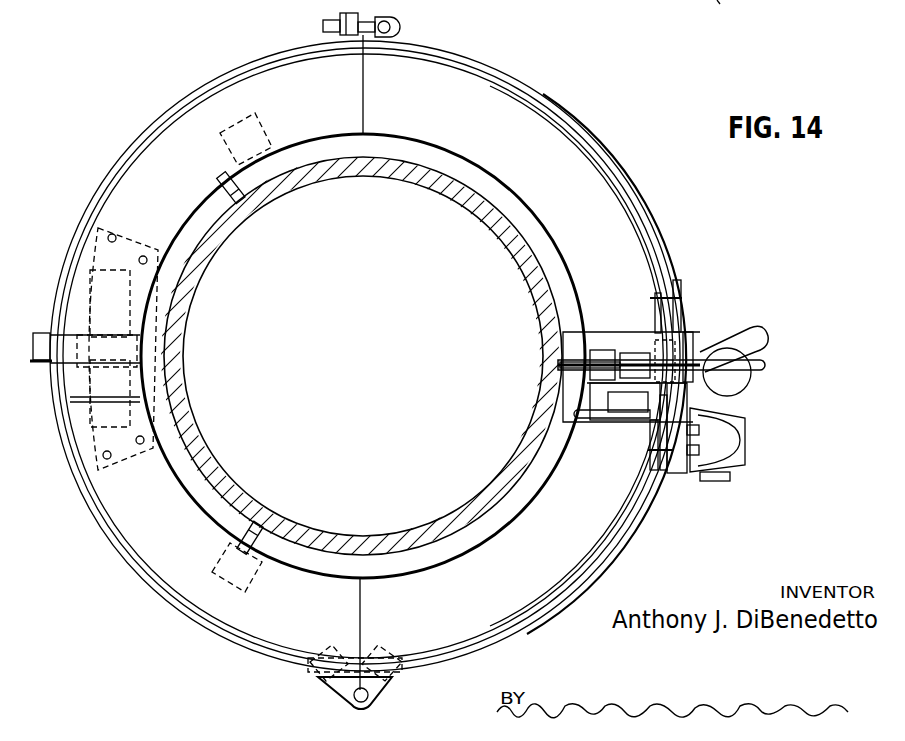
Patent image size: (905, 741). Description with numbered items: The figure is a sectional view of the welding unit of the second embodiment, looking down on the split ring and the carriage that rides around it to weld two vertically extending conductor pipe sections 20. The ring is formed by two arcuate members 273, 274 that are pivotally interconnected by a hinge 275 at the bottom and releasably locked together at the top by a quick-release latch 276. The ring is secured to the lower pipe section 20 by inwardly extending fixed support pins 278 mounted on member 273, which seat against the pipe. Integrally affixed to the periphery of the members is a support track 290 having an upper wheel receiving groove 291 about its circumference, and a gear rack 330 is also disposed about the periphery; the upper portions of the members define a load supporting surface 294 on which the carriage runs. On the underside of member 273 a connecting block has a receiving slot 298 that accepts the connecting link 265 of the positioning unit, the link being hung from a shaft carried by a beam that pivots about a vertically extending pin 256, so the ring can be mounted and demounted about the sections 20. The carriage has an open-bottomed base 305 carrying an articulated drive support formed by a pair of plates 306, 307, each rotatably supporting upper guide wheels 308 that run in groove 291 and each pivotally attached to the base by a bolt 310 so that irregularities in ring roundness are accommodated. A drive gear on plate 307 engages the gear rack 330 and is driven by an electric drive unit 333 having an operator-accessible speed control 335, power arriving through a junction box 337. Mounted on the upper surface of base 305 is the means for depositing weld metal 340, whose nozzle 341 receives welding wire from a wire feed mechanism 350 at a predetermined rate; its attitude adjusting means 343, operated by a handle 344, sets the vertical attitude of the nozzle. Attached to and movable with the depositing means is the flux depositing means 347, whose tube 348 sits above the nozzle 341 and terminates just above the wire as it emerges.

The conductor pipe sections 20 is at (354, 176).
The vertically extending pin 256 is at (745, 6).
The connecting link 265 is at (40, 333).
The arcuate member 273 is at (381, 374).
The arcuate member 274 is at (470, 664).
The hinge 275 is at (338, 702).
The quick-release latch 276 is at (379, 13).
The fixed support pins 278 is at (264, 190).
The support track 290 is at (611, 184).
The upper wheel receiving groove 291 is at (624, 210).
The load supporting surface 294 is at (549, 173).
The receiving slot 298 is at (58, 368).
The open-bottomed base 305 is at (568, 336).
The plate 306 is at (682, 296).
The plate 307 is at (667, 480).
The upper guide wheels 308 is at (655, 305).
The bolt 310 is at (688, 330).
The gear rack 330 is at (652, 241).
The electric drive unit 333 is at (715, 410).
The speed control 335 is at (722, 478).
The junction box 337 is at (690, 480).
The means for depositing weld metal 340 is at (620, 352).
The nozzle 341 is at (572, 370).
The means for adjusting the vertical attitude of nozzle 343 is at (590, 386).
The handle 344 is at (595, 425).
The means for depositing welding flux 347 is at (657, 358).
The tube 348 is at (560, 362).
The wire feed mechanism 350 is at (762, 350).